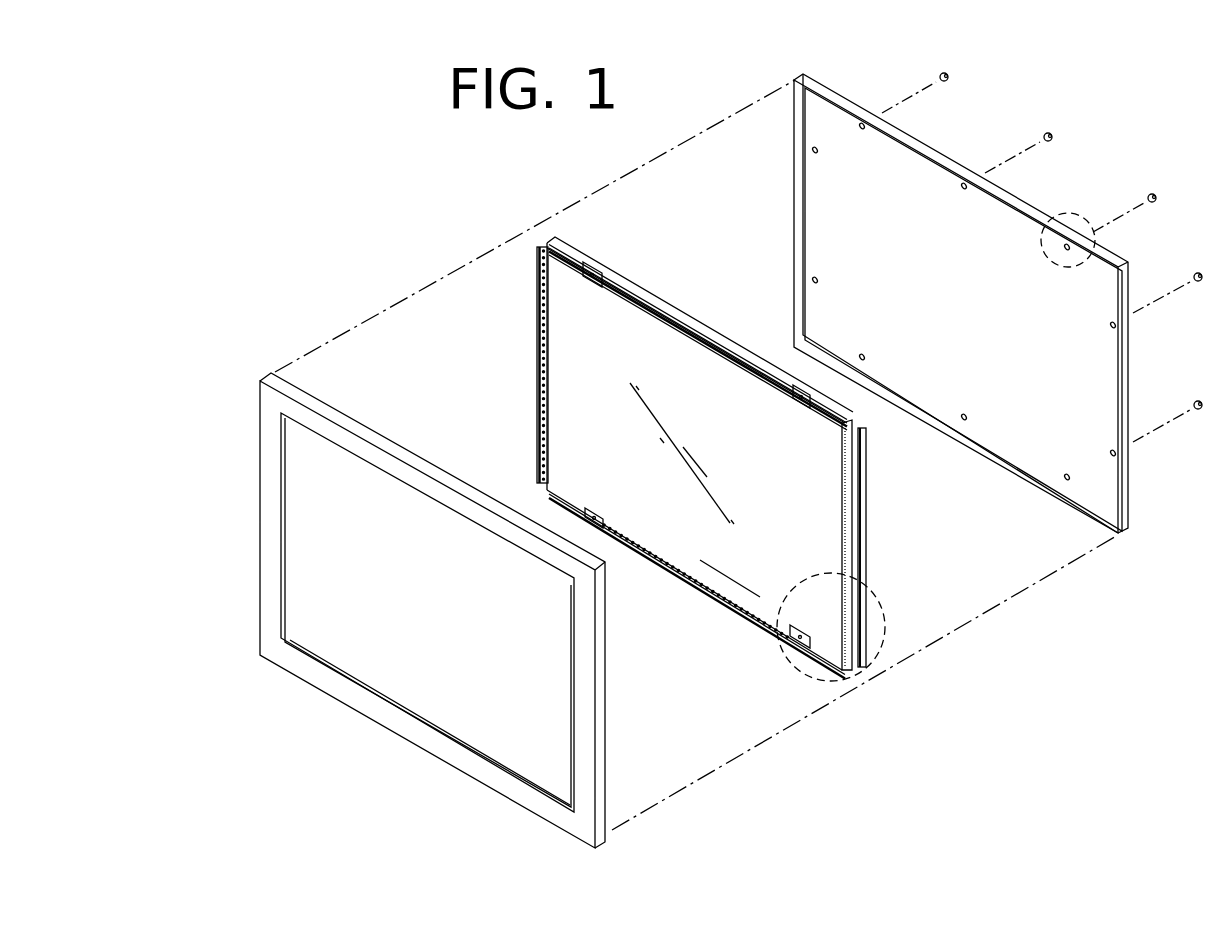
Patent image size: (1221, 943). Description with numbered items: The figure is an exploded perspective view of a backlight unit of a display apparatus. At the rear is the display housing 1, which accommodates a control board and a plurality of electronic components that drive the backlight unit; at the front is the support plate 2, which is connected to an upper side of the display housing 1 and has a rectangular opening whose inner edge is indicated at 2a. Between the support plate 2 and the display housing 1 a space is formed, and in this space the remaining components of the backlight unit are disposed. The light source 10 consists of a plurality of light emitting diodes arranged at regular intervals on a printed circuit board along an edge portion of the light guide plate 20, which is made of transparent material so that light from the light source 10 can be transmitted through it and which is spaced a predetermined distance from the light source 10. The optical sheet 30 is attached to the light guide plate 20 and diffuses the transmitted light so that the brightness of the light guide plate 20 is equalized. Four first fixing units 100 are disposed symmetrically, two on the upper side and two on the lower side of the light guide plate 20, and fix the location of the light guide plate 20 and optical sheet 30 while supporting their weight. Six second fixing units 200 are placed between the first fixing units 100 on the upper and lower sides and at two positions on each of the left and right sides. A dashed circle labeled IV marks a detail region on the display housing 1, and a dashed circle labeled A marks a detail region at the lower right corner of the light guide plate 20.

The display housing 1 is at (937, 154).
The support plate 2 is at (265, 527).
The frame inner edge / opening 2a is at (382, 678).
The light source 10 is at (668, 572).
The light guide plate 20 is at (852, 635).
The optical sheet 30 is at (745, 590).
The first fixing unit 100 is at (597, 256).
The second fixing unit 200 is at (540, 307).
The detail view IV region IV is at (1078, 216).
The detail region A is at (858, 687).